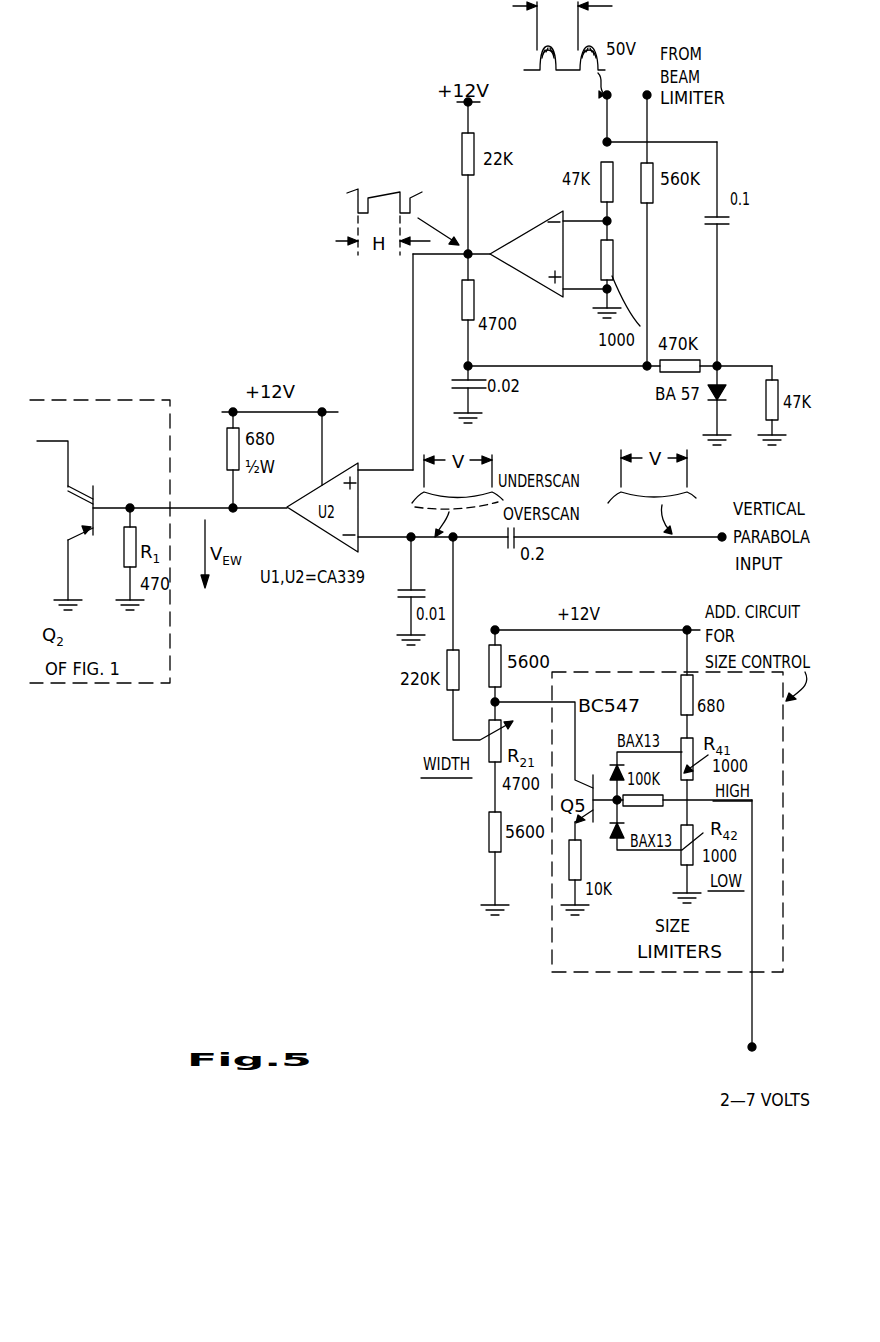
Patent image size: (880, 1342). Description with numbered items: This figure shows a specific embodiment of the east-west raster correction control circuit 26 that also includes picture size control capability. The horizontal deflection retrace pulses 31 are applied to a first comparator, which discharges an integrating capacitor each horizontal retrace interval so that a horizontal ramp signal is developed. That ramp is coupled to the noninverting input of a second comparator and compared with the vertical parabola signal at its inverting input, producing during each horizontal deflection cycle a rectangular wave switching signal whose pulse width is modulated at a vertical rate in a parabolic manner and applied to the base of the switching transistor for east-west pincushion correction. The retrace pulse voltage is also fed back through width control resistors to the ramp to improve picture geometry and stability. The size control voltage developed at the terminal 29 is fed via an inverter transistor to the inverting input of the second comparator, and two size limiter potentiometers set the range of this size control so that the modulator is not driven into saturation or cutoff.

The east-west raster correction control circuit 26 is at (367, 349).
The terminal 29 is at (755, 1045).
The horizontal deflection retrace pulses 31 is at (540, 62).